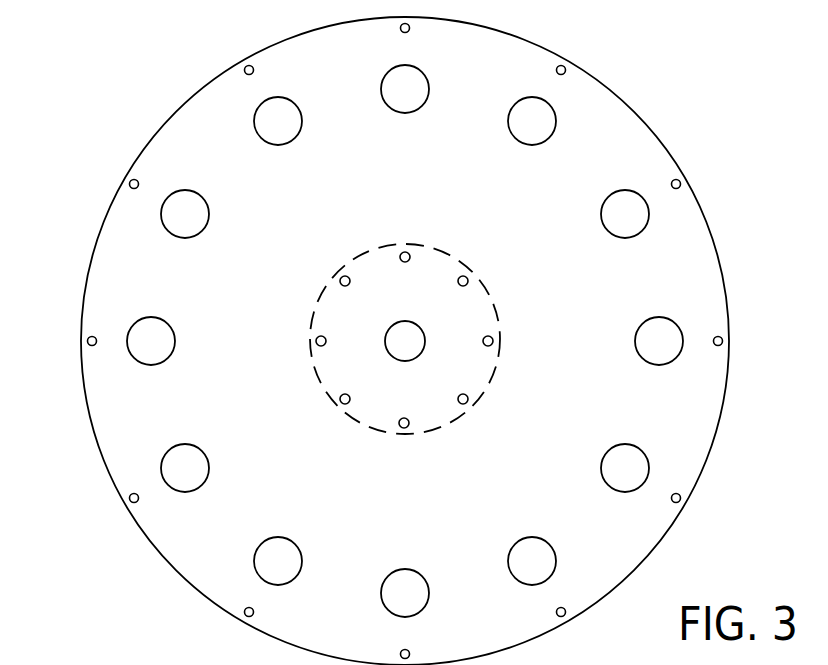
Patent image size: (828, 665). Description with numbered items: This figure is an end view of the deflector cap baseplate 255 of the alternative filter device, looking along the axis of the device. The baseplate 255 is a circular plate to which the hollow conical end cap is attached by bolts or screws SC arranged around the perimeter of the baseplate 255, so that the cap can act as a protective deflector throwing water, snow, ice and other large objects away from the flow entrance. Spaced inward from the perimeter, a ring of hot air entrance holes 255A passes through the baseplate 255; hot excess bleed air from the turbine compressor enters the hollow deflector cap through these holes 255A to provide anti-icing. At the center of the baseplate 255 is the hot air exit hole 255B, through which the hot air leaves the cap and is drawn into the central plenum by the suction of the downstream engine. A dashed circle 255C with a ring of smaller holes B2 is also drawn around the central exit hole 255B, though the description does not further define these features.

The baseplate 255 is at (422, 498).
The hot air entrance holes 255A is at (405, 112).
The hot air exit hole 255B is at (400, 330).
The dashed circle region 255C is at (358, 260).
The small bolt holes B2 is at (458, 400).
The bolts or screws SC is at (130, 182).